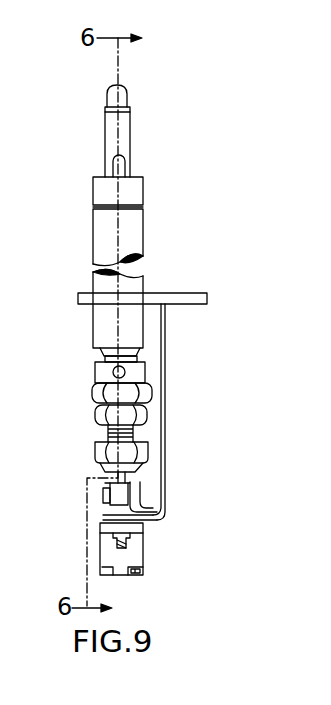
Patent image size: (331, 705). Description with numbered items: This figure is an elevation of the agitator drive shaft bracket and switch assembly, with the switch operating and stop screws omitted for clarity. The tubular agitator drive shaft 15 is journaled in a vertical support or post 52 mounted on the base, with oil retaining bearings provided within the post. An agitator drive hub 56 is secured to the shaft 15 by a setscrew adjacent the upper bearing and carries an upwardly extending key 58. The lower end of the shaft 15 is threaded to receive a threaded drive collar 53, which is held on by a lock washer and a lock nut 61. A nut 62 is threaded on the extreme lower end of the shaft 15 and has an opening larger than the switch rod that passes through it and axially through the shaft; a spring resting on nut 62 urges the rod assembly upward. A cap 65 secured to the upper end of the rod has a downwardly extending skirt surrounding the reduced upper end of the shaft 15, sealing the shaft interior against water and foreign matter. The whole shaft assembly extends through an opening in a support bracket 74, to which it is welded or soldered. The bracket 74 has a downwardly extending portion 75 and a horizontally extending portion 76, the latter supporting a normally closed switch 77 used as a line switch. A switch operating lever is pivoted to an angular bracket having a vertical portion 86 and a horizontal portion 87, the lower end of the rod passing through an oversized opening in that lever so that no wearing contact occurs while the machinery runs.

The agitator drive shaft 15 is at (104, 137).
The vertical support or post 52 is at (147, 278).
The threaded drive collar 53 is at (92, 393).
The agitator drive hub 56 is at (93, 193).
The key 58 is at (125, 161).
The lock nut 61 is at (95, 418).
The nut 62 is at (95, 453).
The cap 65 is at (127, 95).
The support bracket 74 is at (232, 280).
The downwardly extending portion 75 is at (166, 437).
The horizontally extending portion 76 is at (150, 522).
The switch 77 is at (145, 560).
The vertical portion 86 is at (125, 513).
The horizontal portion 87 is at (105, 503).